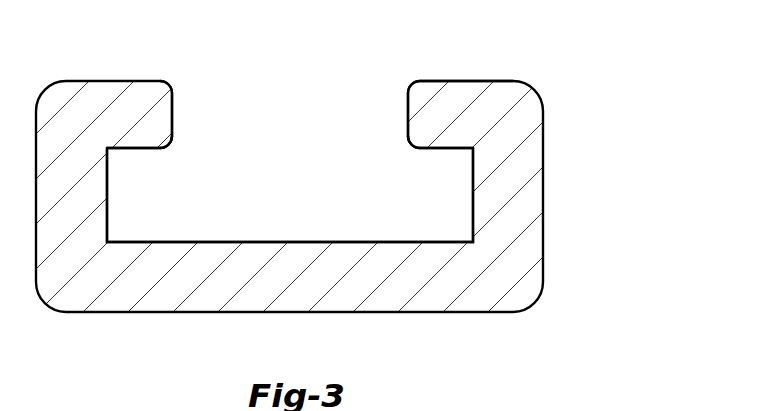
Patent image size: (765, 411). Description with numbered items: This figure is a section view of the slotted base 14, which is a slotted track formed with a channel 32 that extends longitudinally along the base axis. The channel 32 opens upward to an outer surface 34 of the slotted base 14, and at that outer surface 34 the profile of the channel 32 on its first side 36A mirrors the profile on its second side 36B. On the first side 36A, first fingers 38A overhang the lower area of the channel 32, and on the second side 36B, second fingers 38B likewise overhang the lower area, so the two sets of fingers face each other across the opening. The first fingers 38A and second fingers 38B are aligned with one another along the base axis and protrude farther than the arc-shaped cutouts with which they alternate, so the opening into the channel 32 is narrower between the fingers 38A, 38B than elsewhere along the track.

The slotted base 14 is at (590, 52).
The channel 32 is at (275, 215).
The outer surface 34 is at (505, 80).
The first side 36A is at (218, 158).
The second side 36B is at (362, 158).
The first fingers 38A is at (172, 116).
The second fingers 38B is at (408, 115).